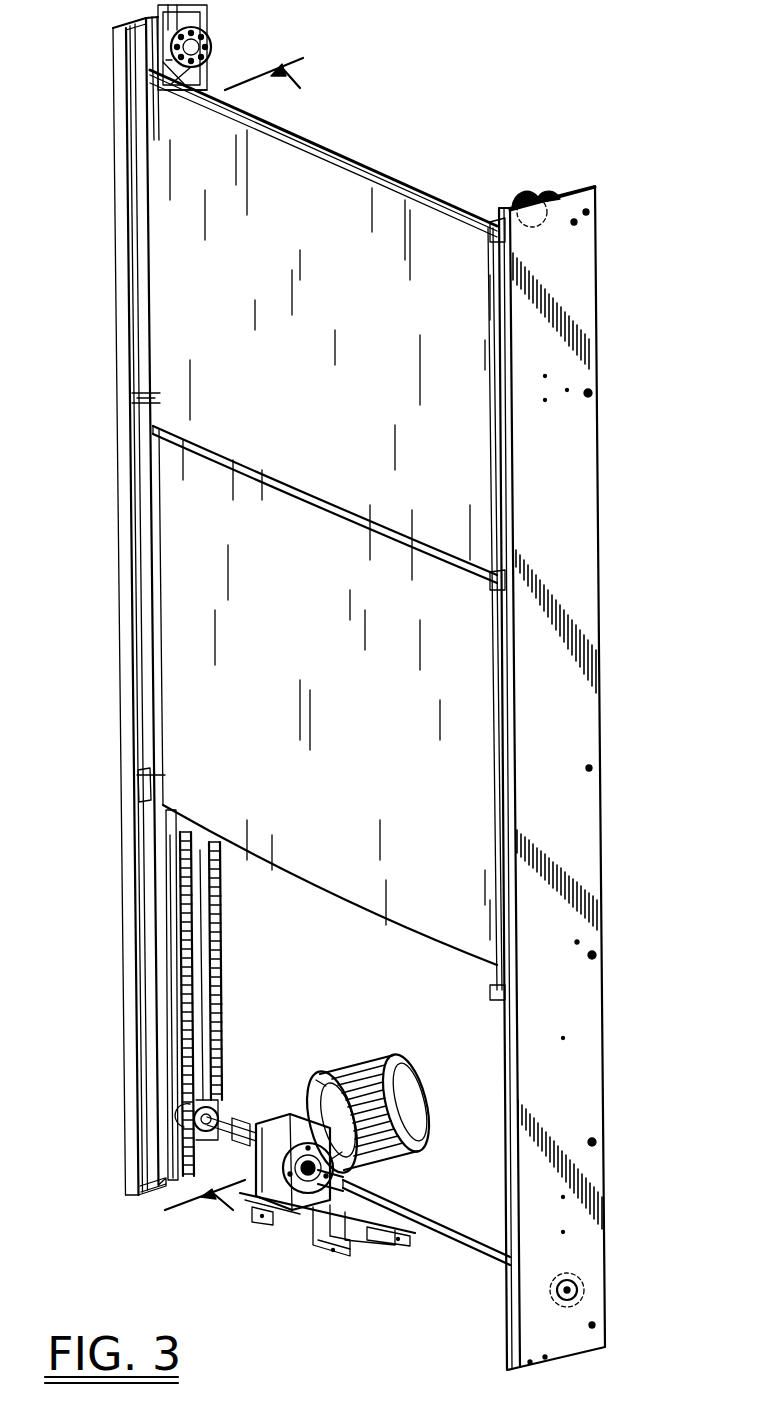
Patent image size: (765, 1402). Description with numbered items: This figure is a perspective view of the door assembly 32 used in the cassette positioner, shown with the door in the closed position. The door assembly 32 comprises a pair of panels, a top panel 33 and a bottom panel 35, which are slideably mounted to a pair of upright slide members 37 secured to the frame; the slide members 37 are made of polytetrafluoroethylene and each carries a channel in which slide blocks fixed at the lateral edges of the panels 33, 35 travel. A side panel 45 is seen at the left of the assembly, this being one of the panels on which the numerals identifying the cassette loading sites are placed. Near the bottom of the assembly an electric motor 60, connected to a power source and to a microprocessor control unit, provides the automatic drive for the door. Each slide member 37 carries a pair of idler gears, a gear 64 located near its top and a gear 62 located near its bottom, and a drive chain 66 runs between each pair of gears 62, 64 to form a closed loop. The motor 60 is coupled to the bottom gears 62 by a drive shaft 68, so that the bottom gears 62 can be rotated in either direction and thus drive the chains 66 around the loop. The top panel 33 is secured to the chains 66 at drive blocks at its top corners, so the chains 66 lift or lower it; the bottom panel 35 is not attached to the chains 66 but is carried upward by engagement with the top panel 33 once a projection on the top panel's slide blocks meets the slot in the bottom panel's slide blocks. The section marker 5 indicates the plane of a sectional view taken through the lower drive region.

The door assembly 32 is at (622, 748).
The top panel 33 is at (373, 205).
The bottom panel 35 is at (333, 687).
The slide member 37 is at (122, 46).
The side panel 45 is at (138, 790).
The section line 5- 5 is at (234, 627).
The electric motor 60 is at (366, 1061).
The bottom idler gear 62 is at (226, 1108).
The top idler gear 64 is at (206, 48).
The drive chain 66 is at (222, 962).
The drive shaft 68 is at (492, 1203).